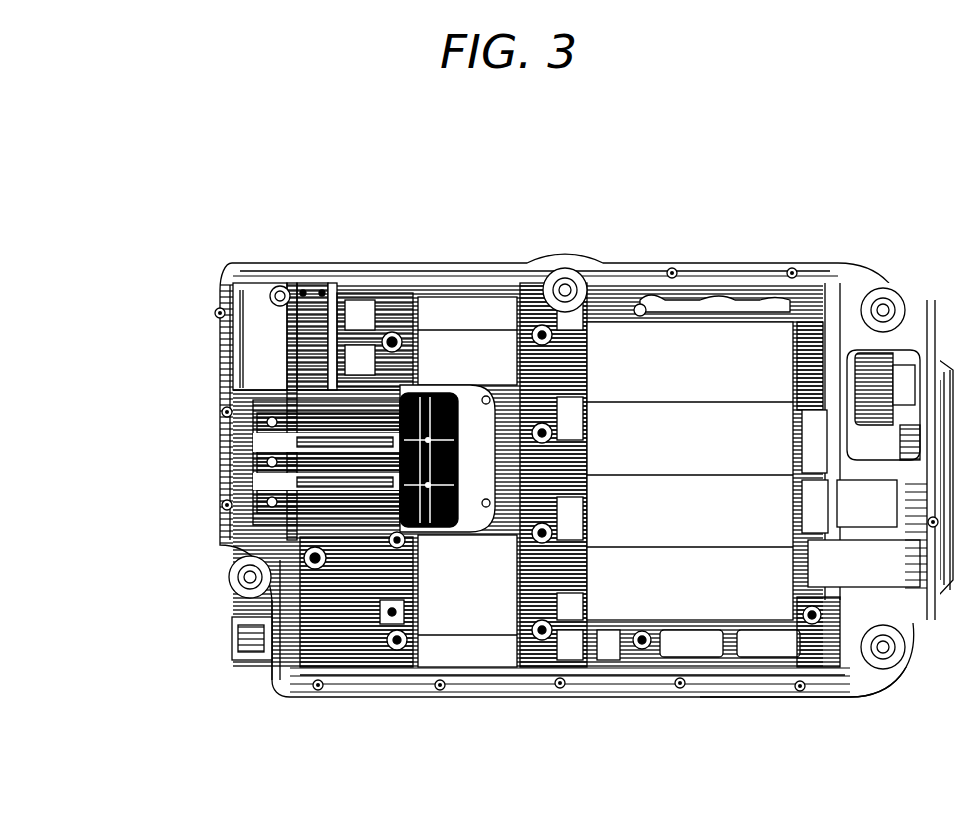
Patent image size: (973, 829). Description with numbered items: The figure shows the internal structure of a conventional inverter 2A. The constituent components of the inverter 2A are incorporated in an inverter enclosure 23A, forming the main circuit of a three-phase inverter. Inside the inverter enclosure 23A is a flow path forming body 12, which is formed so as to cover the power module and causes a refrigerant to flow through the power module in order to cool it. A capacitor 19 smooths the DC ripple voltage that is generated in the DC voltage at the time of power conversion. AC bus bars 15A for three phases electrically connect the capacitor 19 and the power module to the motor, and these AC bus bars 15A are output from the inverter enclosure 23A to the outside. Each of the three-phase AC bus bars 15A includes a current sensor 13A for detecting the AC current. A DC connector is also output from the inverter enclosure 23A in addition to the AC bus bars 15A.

The inverter 2A is at (108, 166).
The flow path forming body 12 is at (483, 332).
The capacitor 19 is at (625, 355).
The current sensor 13A is at (453, 530).
The AC bus bars 15A is at (280, 414).
The inverter enclosure 23A is at (800, 692).